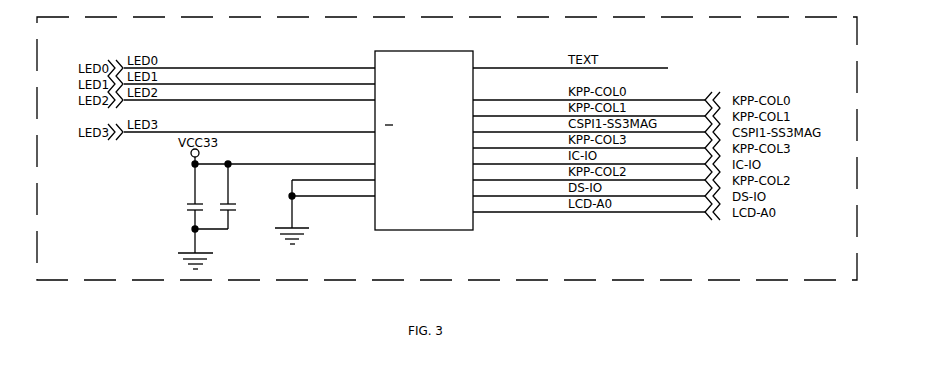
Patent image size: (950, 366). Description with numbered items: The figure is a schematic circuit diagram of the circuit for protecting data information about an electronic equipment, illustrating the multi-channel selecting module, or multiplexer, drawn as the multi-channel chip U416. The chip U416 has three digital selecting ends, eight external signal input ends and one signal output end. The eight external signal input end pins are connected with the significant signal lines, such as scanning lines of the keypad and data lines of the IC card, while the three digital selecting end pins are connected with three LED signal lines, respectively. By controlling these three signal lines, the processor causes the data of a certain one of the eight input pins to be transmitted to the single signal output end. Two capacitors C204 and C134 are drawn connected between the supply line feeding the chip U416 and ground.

The 74HC4051 analog multiplexer U416 is at (421, 142).
The 10nF capacitor C204 is at (171, 222).
The 1uF capacitor C134 is at (234, 196).